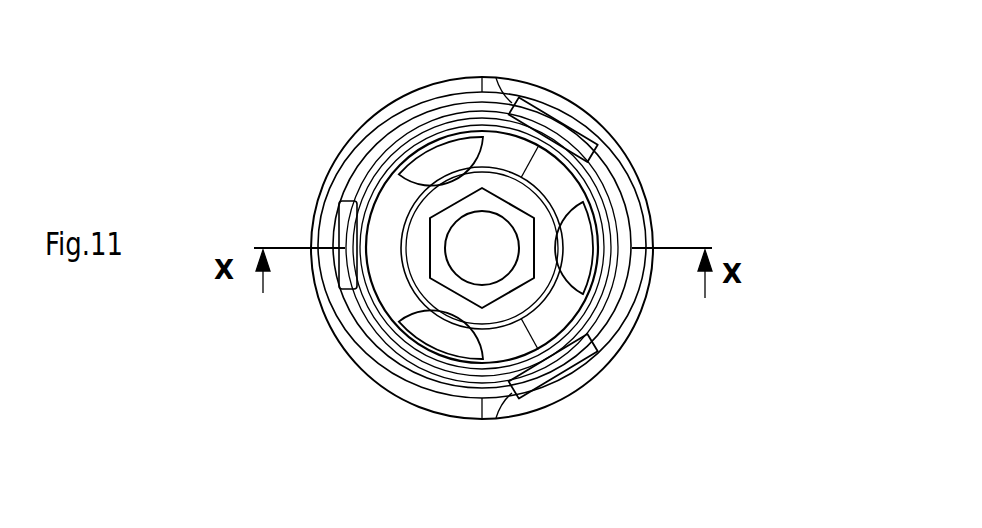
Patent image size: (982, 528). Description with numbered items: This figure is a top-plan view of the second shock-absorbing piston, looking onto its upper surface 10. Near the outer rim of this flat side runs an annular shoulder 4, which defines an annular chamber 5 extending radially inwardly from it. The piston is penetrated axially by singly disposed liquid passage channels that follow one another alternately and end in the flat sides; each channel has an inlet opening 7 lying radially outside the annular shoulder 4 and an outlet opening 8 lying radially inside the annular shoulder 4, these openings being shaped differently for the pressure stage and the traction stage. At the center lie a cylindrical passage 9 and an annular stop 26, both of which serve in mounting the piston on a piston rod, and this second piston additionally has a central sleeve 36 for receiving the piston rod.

The annular shoulder 4 is at (352, 222).
The annular chamber 5 is at (558, 313).
The inlet opening 7 is at (558, 137).
The outlet opening 8 is at (430, 163).
The cylindrical passage 9 is at (482, 234).
The upper surface 10 is at (587, 248).
The annular stop 26 is at (432, 245).
The central sleeve 36 is at (443, 270).